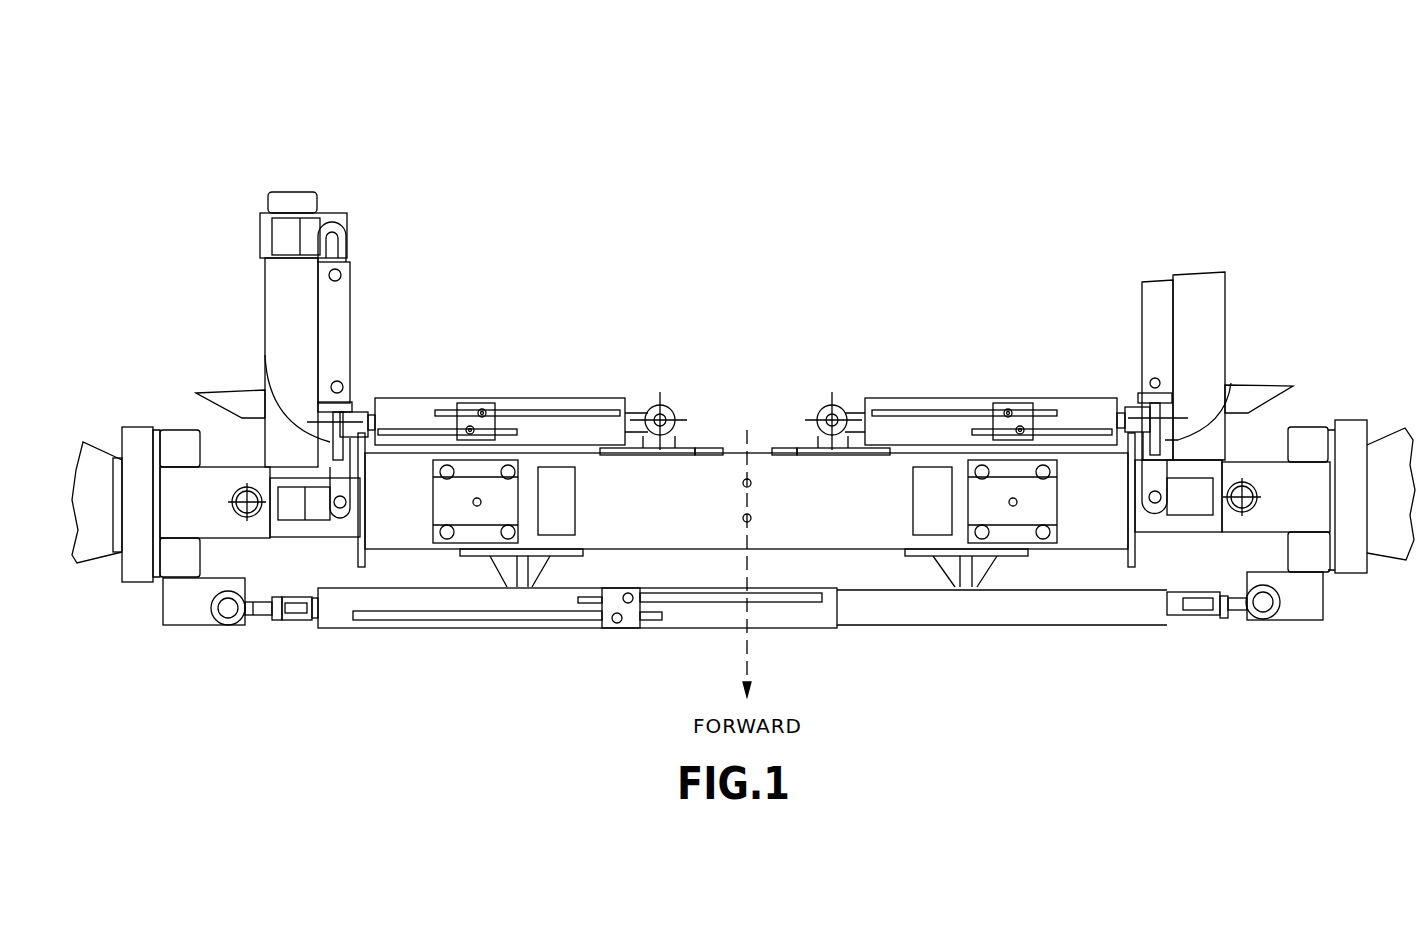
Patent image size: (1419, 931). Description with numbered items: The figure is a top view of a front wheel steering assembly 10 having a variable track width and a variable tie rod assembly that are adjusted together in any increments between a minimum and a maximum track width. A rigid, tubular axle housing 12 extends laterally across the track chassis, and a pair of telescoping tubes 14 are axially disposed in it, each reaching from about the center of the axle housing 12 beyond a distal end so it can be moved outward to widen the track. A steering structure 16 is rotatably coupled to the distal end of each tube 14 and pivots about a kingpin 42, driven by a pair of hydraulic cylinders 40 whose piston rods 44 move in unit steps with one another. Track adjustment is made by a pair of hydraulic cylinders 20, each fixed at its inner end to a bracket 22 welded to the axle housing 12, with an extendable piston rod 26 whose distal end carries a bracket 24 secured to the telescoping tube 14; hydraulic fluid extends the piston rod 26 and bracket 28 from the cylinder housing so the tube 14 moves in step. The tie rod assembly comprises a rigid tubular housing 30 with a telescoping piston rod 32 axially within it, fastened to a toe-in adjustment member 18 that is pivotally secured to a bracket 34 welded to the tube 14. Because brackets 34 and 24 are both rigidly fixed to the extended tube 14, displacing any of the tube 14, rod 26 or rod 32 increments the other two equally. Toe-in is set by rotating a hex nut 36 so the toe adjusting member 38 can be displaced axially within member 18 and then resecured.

The front wheel steering assembly 10 is at (918, 162).
The axle housing 12 is at (760, 460).
The telescoping tube 14 is at (220, 475).
The steering structure 16 is at (104, 462).
The toe-in adjustment member 18 is at (290, 623).
The hydraulic cylinder 20 is at (568, 402).
The bracket 22 is at (668, 406).
The bracket 24 is at (348, 400).
The piston rod 26 is at (368, 413).
The bracket 28 is at (358, 410).
The tubular housing 30 is at (683, 620).
The piston rod 32 is at (308, 622).
The bracket 34 is at (182, 623).
The hex nut 36 is at (275, 622).
The toe adjusting member 38 is at (260, 612).
The hydraulic cylinder 40 is at (343, 300).
The kingpin 42 is at (234, 510).
The piston rod 44 is at (266, 357).